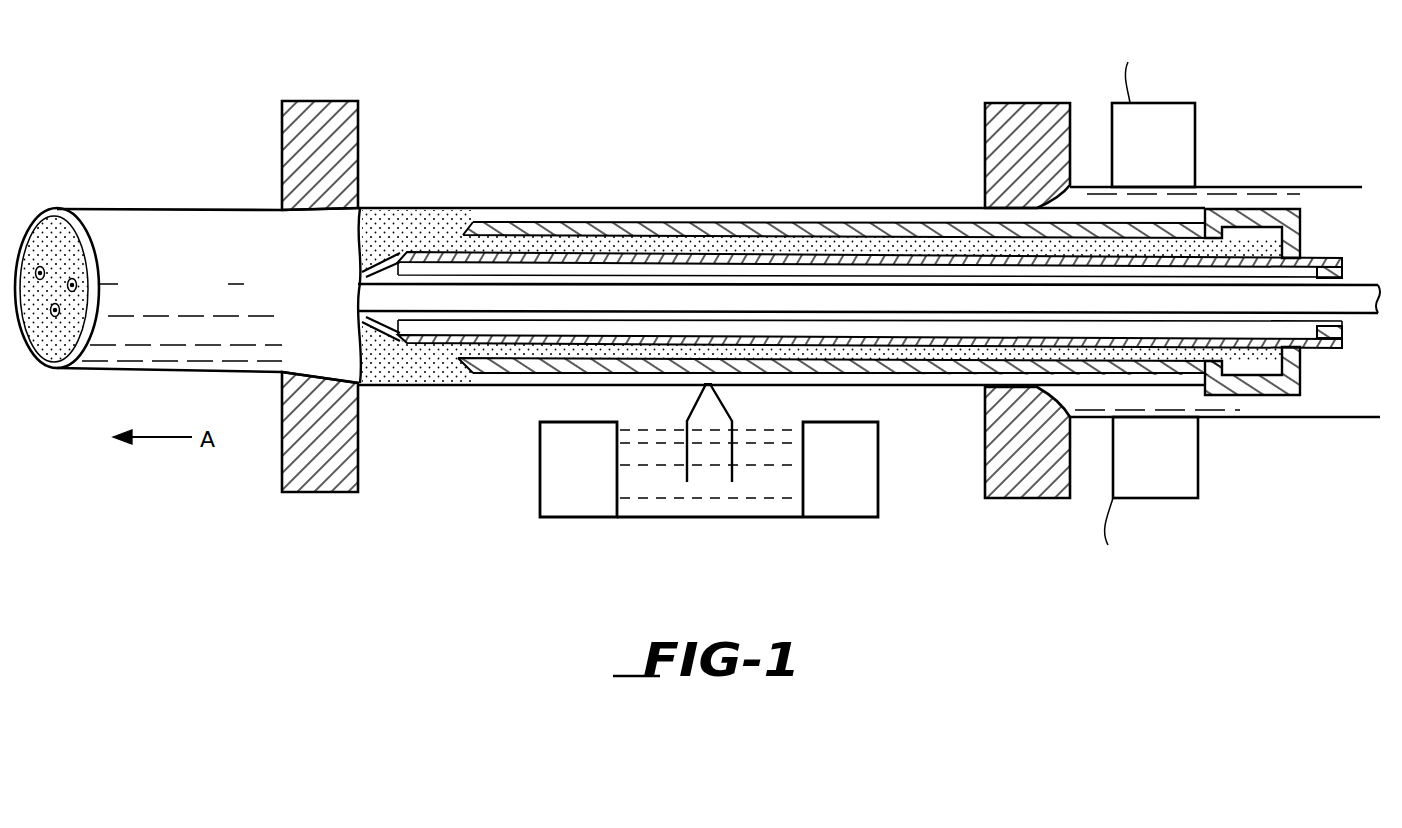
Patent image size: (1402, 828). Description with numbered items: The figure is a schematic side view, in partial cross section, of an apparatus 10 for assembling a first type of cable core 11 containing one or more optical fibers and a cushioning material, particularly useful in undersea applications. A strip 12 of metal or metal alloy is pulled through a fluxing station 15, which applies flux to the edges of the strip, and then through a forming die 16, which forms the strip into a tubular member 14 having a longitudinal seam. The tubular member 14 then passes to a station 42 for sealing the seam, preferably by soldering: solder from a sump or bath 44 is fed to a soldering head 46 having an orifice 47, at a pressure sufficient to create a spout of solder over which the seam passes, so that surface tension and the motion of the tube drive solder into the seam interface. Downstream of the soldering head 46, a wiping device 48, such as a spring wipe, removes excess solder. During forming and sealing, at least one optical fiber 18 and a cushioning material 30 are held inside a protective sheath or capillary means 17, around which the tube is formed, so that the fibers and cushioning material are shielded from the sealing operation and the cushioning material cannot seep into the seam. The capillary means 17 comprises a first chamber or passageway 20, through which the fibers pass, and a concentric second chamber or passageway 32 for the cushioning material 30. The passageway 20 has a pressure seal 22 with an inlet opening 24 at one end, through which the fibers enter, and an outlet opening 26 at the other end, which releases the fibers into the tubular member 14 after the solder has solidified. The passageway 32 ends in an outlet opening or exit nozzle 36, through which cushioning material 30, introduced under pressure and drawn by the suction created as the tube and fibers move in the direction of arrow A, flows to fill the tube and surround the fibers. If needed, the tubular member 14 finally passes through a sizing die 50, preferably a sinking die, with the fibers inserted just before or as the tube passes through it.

The apparatus 10 is at (765, 199).
The cable core 11 is at (107, 208).
The strip 12 is at (1298, 195).
The tubular member 14 is at (194, 213).
The fluxing station 15 is at (1165, 154).
The forming die 16 is at (1027, 101).
The protective sheath or capillary means 17 is at (920, 222).
The optical fiber 18 is at (71, 292).
The first chamber or passageway 20 is at (1307, 257).
The pressure seal 22 is at (1332, 267).
The inlet opening 24 is at (1346, 325).
The outlet opening 26 is at (380, 378).
The cushioning material 30 is at (50, 238).
The second chamber or passageway 32 is at (1277, 392).
The outlet opening or exit nozzle 36 is at (458, 245).
The sealing station 42 is at (723, 520).
The solder sump or bath 44 is at (648, 500).
The soldering head 46 is at (728, 404).
The orifice 47 is at (703, 377).
The wiping device 48 is at (640, 392).
The sizing die 50 is at (323, 494).